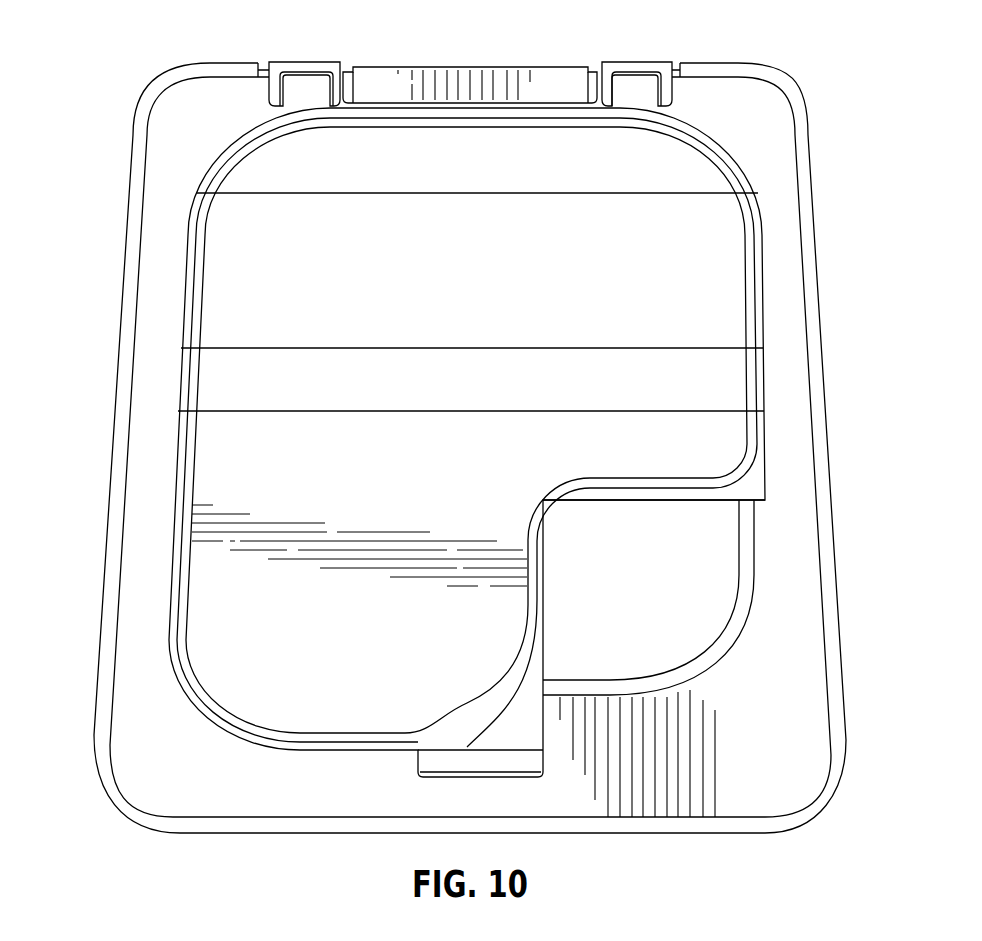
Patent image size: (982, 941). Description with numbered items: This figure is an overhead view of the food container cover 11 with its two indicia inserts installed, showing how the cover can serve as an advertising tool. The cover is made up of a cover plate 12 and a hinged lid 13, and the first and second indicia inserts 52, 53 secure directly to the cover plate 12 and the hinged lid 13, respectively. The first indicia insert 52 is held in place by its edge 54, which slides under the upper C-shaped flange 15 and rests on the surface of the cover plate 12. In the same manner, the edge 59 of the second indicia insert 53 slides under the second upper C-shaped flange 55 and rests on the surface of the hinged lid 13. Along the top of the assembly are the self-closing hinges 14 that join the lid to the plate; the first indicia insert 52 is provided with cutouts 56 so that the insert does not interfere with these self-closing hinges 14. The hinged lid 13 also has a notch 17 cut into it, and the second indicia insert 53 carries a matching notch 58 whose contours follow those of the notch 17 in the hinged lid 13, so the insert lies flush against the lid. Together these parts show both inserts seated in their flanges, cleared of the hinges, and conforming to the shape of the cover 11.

The food container cover 11 is at (840, 402).
The cover plate 12 is at (146, 641).
The hinged lid 13 is at (217, 485).
The self-closing hinges 14 is at (303, 62).
The upper C-shaped flange 15 is at (830, 486).
The notch 17 is at (558, 508).
The first indicia insert 52 is at (793, 657).
The second indicia insert 53 is at (228, 277).
The edge 54 is at (815, 522).
The second upper C-shaped flange 55 is at (192, 603).
The cutouts 56 is at (345, 68).
The notch 58 is at (628, 480).
The edge 59 is at (178, 502).